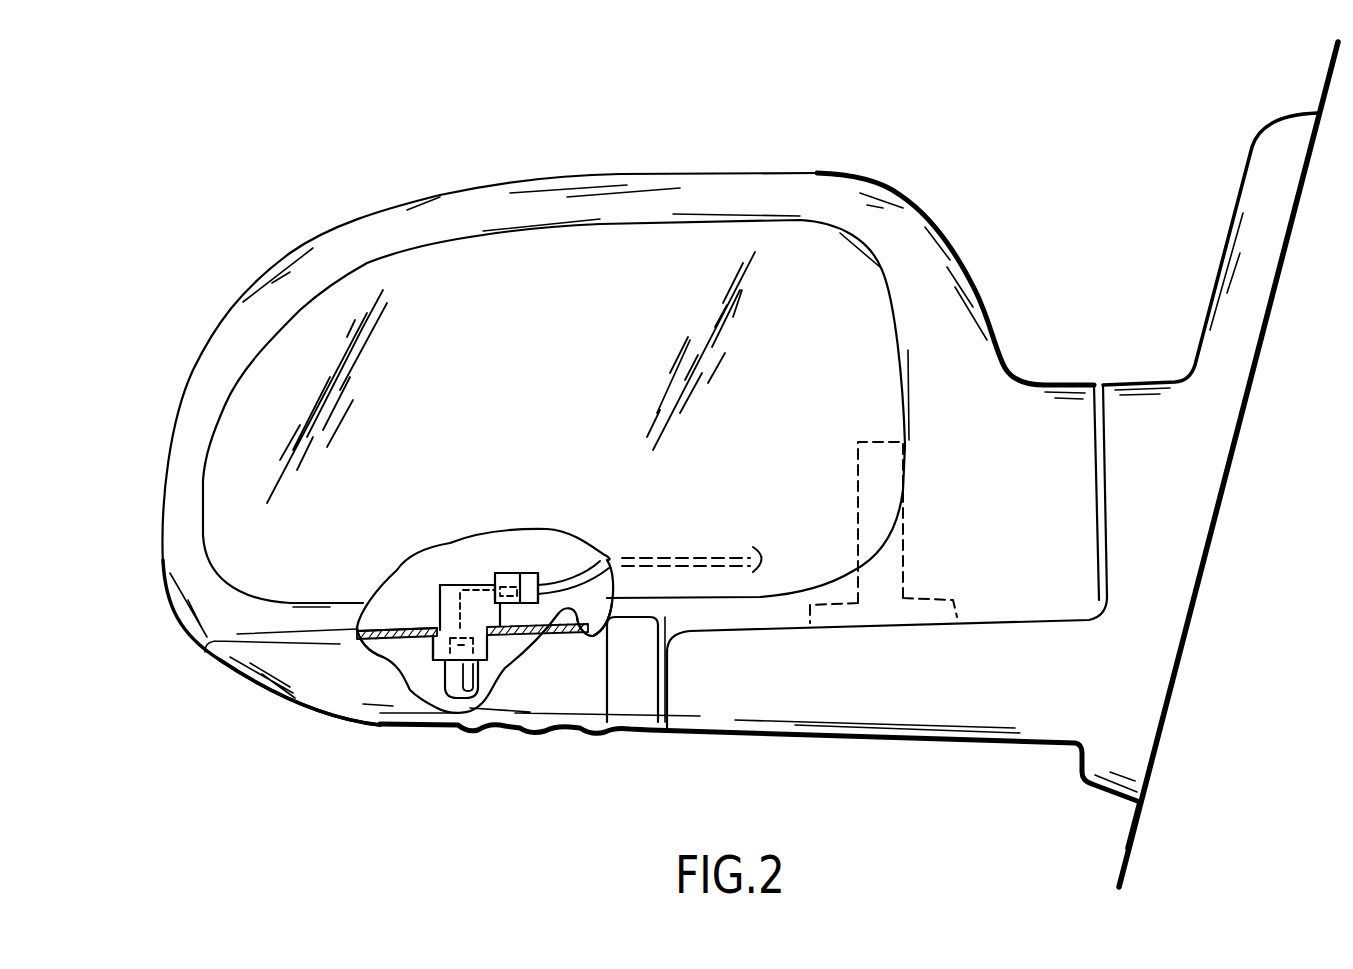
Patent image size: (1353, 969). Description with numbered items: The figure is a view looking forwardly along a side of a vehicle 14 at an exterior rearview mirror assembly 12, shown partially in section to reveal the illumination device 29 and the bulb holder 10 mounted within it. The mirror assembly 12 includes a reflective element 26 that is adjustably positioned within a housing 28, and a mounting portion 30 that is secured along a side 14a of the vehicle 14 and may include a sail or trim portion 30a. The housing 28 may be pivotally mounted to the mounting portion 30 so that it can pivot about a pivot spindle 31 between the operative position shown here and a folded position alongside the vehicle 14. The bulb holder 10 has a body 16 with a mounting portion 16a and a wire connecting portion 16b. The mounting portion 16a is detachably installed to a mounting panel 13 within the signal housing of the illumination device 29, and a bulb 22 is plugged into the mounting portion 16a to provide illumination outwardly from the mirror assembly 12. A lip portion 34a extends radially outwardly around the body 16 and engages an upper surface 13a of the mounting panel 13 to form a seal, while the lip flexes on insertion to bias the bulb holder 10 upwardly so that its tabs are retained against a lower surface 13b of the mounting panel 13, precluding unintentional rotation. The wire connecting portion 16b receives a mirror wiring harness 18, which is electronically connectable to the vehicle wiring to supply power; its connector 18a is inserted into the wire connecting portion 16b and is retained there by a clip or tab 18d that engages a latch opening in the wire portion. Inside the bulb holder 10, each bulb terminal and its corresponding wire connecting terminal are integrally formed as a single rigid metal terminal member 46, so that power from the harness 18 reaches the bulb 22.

The bulb holder 10 is at (444, 751).
The exterior rearview mirror assembly 12 is at (453, 158).
The mounting panel 13 is at (577, 636).
The upper surface of mounting panel 13a is at (590, 618).
The lower surface of mounting panel 13b is at (428, 640).
The vehicle 14 is at (1120, 868).
The side of vehicle 14a is at (1132, 823).
The body 16 is at (440, 586).
The mounting portion 16a is at (382, 655).
The wire connecting portion 16b is at (489, 585).
The mirror wiring harness 18 is at (584, 553).
The connector 18a is at (528, 574).
The clip or tab 18d is at (505, 574).
The bulb 22 is at (461, 699).
The reflective element 26 is at (710, 250).
The housing 28 is at (597, 200).
The illumination device 29 is at (633, 707).
The mounting portion 30 is at (1030, 705).
The sail or trim portion 30a is at (1255, 166).
The pivot spindle 31 is at (903, 527).
The lip portion 34a is at (432, 634).
The terminal member 46 is at (442, 584).